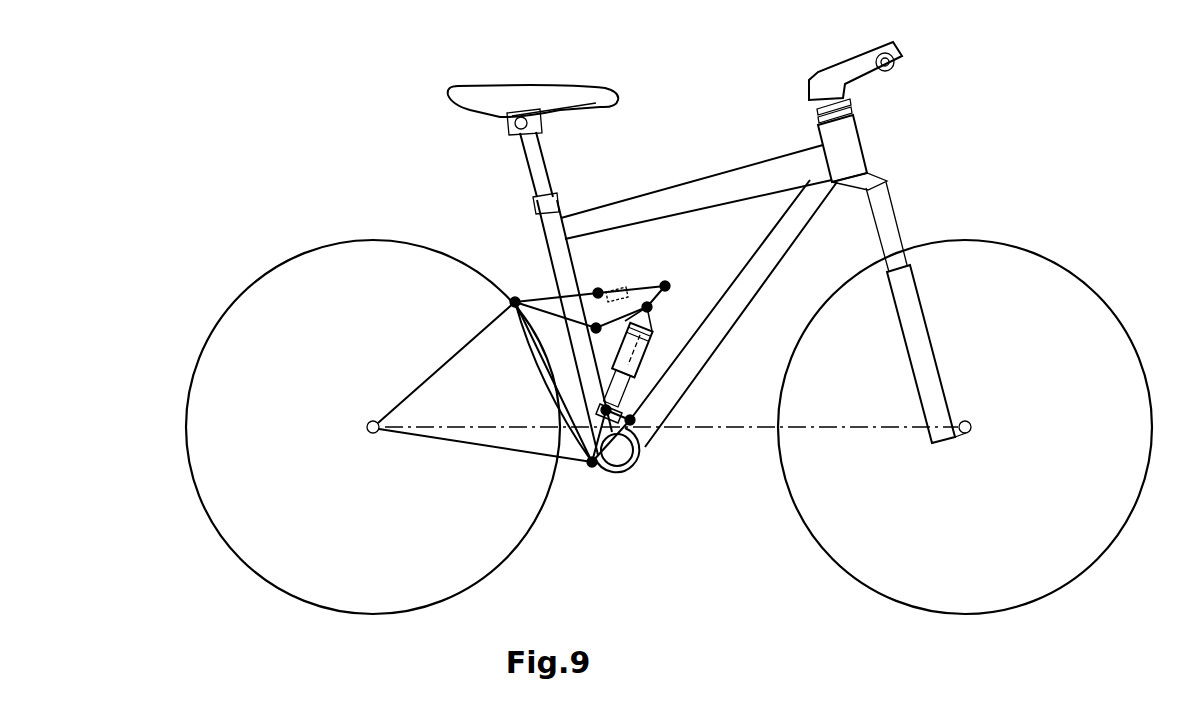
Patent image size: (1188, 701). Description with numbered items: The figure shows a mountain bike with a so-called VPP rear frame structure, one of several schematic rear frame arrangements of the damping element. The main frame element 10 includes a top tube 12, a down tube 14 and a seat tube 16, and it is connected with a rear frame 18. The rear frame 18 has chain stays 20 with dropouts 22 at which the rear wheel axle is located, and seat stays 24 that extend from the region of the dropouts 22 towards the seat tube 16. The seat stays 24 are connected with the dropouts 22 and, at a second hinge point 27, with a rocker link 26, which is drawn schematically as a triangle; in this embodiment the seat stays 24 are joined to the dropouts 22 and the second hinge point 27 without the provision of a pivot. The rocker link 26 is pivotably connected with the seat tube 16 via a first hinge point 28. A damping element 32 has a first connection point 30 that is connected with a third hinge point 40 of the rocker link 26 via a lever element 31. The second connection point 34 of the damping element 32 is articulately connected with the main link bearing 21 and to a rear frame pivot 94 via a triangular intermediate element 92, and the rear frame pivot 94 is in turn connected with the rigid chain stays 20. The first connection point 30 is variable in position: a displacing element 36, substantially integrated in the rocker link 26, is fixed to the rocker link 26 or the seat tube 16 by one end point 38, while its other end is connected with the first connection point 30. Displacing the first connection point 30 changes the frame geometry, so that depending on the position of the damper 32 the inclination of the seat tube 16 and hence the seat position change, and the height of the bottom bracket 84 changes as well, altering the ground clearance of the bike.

The main frame element 10 is at (683, 160).
The top tube 12 is at (752, 164).
The down tube 14 is at (712, 322).
The seat tube 16 is at (545, 240).
The rear frame 18 is at (408, 352).
The chain stays 20 is at (473, 450).
The main link bearing 21 is at (634, 425).
The dropouts 22 is at (372, 437).
The seat stays 24 is at (440, 312).
The rocker link 26 is at (555, 312).
The second hinge point 27 is at (514, 298).
The first hinge point 28 is at (510, 302).
The first connection point 30 is at (662, 295).
The lever element 31 is at (668, 285).
The damping element 32 is at (610, 352).
The second connection point 34 is at (622, 393).
The displacing element 36 is at (622, 290).
The end point 38 is at (533, 210).
The third hinge point 40 is at (665, 284).
The bottom bracket 84 is at (615, 455).
The triangular intermediate element 92 is at (600, 420).
The rear frame pivot 94 is at (588, 464).